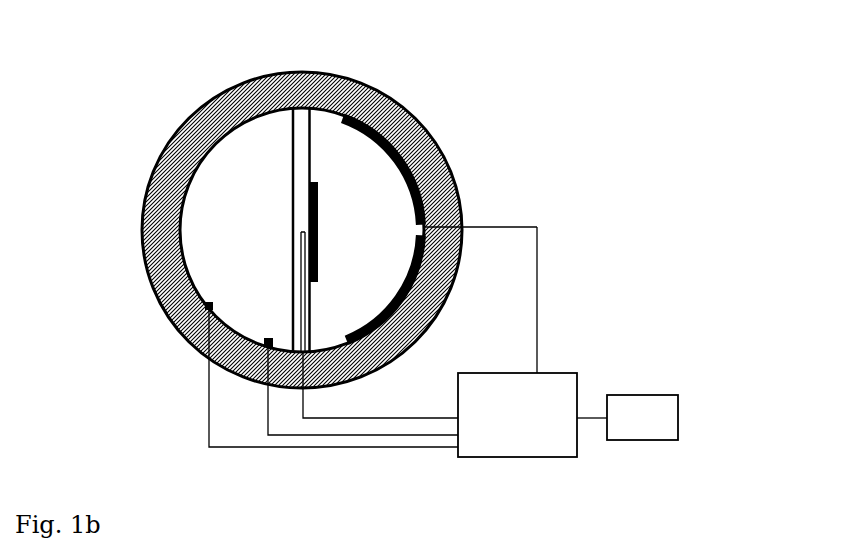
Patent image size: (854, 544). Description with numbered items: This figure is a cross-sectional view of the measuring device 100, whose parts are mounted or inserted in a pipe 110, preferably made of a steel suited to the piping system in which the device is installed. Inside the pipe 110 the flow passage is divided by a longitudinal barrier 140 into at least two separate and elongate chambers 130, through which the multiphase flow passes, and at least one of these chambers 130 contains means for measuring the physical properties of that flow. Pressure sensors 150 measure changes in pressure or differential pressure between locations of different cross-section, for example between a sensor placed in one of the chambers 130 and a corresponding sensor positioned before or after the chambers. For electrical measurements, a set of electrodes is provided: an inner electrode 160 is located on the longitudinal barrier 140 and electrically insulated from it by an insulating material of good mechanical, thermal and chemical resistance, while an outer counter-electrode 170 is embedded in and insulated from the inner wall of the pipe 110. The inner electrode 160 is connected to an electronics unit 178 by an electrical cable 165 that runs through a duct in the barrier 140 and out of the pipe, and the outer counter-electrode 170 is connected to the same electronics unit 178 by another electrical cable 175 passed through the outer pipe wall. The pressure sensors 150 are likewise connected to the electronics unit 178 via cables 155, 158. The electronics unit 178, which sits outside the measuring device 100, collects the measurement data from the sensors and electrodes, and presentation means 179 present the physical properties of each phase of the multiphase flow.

The measuring device 100 is at (152, 109).
The pipe 110 is at (428, 114).
The elongate chambers 130 is at (261, 191).
The longitudinal barrier 140 is at (299, 142).
The pressure sensors 150 is at (252, 334).
The cable 155 is at (311, 374).
The cable 158 is at (341, 386).
The inner electrode 160 is at (331, 266).
The electrical cable 165 is at (379, 325).
The outer counter-electrode 170 is at (438, 203).
The electrical cable 175 is at (556, 300).
The electronics unit 178 is at (517, 415).
The presentation means 179 is at (627, 417).